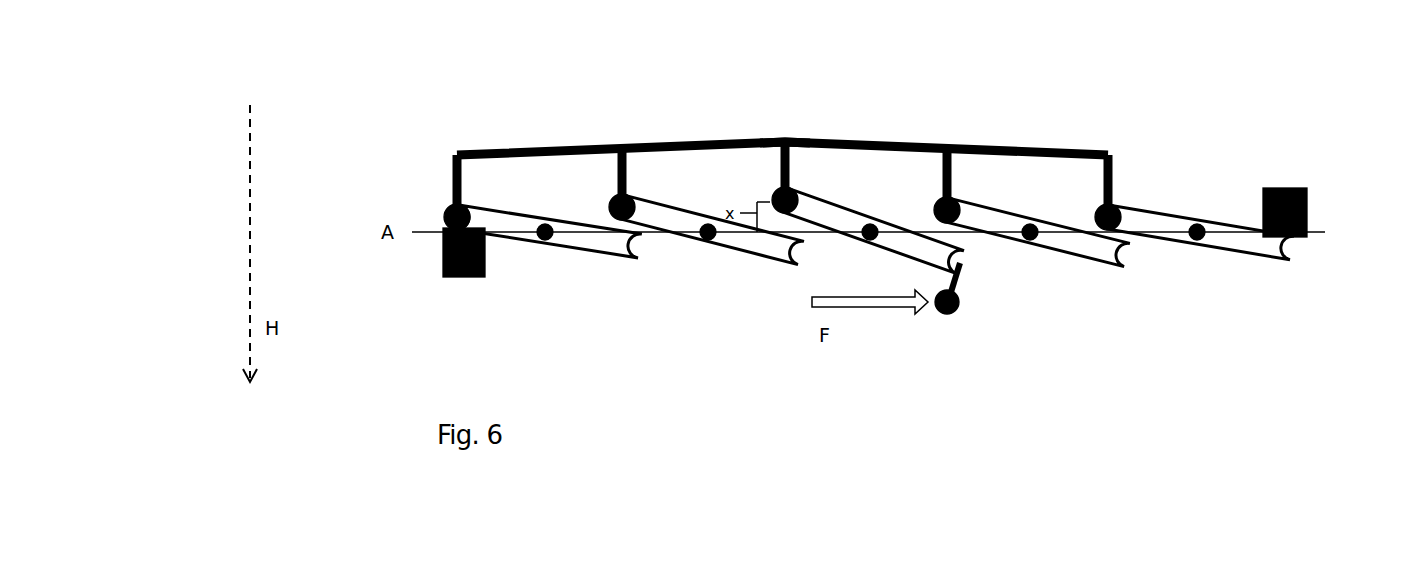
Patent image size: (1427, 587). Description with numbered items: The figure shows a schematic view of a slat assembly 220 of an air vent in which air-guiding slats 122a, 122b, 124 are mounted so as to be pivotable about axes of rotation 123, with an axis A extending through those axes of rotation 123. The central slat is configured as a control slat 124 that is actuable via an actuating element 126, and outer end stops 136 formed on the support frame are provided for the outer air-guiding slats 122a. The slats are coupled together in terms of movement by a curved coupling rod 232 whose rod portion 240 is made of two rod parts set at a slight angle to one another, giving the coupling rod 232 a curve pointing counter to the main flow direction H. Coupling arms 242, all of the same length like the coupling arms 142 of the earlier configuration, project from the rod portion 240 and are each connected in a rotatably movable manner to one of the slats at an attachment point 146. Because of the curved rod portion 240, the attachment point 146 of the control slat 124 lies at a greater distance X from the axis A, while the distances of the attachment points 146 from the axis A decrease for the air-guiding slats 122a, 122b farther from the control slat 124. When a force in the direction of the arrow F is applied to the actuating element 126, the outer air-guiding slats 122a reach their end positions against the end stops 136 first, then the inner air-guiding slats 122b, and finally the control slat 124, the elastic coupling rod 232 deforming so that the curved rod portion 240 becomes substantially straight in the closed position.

The slat assembly 220 is at (1186, 132).
The rod portion 240 is at (660, 143).
The curved coupling rod 232 is at (728, 140).
The coupling arm 242 is at (452, 170).
The coupling arm 142 is at (780, 178).
The attachment point 146 is at (447, 210).
The outer air-guiding slat 122a is at (592, 240).
The air-guiding slat 122b is at (755, 245).
The control slat 124 is at (813, 207).
The axis of rotation 123 is at (697, 237).
The actuating element 126 is at (940, 315).
The outer end stop 136 is at (463, 275).